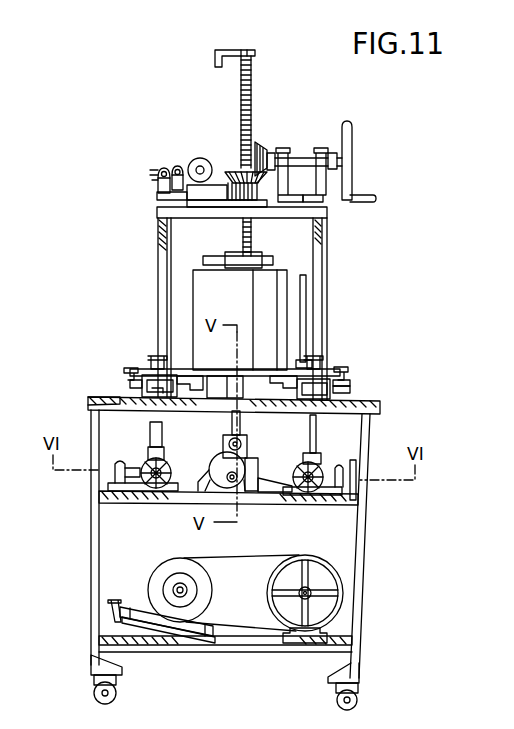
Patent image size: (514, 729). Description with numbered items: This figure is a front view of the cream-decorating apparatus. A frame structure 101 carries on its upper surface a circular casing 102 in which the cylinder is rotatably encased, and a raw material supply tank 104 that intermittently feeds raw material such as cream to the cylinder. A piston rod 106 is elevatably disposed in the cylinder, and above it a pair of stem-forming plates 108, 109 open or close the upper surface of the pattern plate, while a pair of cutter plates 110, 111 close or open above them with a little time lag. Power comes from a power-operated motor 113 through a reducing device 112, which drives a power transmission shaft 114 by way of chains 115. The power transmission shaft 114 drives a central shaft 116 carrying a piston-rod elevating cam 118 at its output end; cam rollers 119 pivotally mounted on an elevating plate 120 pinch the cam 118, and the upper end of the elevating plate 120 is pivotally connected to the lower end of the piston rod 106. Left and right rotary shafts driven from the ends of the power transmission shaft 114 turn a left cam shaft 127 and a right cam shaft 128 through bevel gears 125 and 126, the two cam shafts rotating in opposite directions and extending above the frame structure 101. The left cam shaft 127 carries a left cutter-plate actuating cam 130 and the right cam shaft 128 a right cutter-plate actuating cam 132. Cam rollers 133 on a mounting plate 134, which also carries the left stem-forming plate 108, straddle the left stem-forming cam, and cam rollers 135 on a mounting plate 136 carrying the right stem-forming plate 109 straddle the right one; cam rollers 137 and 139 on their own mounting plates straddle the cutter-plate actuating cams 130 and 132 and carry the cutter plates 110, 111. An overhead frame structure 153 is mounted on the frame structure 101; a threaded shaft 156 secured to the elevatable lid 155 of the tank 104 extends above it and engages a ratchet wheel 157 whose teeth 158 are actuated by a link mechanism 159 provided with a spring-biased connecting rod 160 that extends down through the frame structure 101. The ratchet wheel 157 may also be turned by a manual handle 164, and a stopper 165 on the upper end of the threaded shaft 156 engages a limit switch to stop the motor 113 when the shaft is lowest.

The frame structure 101 is at (381, 413).
The circular casing 102 is at (251, 388).
The raw material supply tank 104 is at (288, 284).
The piston rod 106 is at (232, 420).
The left stem-forming plate 108 is at (215, 372).
The right stem-forming plate 109 is at (284, 343).
The left cutter plate 110 is at (200, 373).
The right cutter plate 111 is at (312, 354).
The reducing device 112 is at (326, 585).
The power-operated motor 113 is at (181, 594).
The power transmission shaft 114 is at (283, 480).
The chains 115 is at (362, 538).
The central shaft 116 is at (232, 480).
The piston-rod elevating cam 118 is at (214, 471).
The cam rollers 119 is at (243, 447).
The elevating plate 120 is at (250, 473).
The bevel gear 125 is at (150, 460).
The bevel gear 126 is at (345, 485).
The left cam shaft 127 is at (157, 432).
The right cam shaft 128 is at (369, 426).
The left cutter-plate actuating cam 130 is at (152, 366).
The right cutter-plate actuating cam 132 is at (330, 376).
The cam rollers 133 is at (100, 401).
The mounting plate 134 is at (132, 383).
The cam rollers 135 is at (352, 389).
The mounting plate 136 is at (352, 381).
The cam rollers 137 is at (124, 370).
The cam rollers 139 is at (348, 371).
The overhead frame structure 153 is at (327, 222).
The elevatable lid 155 is at (216, 259).
The threaded shaft 156 is at (251, 102).
The ratchet wheel 157 is at (258, 198).
The teeth 158 is at (230, 182).
The link mechanism 159 is at (194, 160).
The connecting rod 160 is at (157, 194).
The manual handle 164 is at (352, 142).
The stopper 165 is at (240, 49).